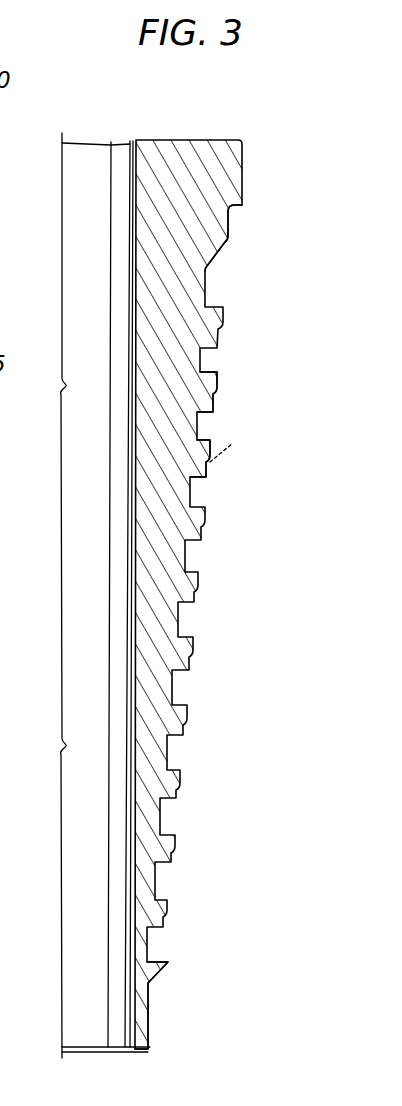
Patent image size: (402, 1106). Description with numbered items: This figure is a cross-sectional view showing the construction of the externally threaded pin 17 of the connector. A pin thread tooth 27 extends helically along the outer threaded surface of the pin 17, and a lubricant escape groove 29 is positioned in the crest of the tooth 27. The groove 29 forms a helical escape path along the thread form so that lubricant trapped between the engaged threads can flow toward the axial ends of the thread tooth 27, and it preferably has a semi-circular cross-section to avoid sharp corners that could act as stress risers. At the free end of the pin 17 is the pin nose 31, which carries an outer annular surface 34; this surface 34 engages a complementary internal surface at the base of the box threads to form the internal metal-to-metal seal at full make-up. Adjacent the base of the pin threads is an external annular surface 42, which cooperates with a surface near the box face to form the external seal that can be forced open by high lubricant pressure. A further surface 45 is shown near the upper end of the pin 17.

The pin 17 is at (155, 629).
The notch 45 is at (235, 211).
The external annular surface 42 is at (230, 238).
The lubricant escape groove 29 is at (219, 393).
The pin thread tooth 27 is at (207, 478).
The outer annular surface 34 is at (148, 998).
The pin nose 31 is at (136, 1023).